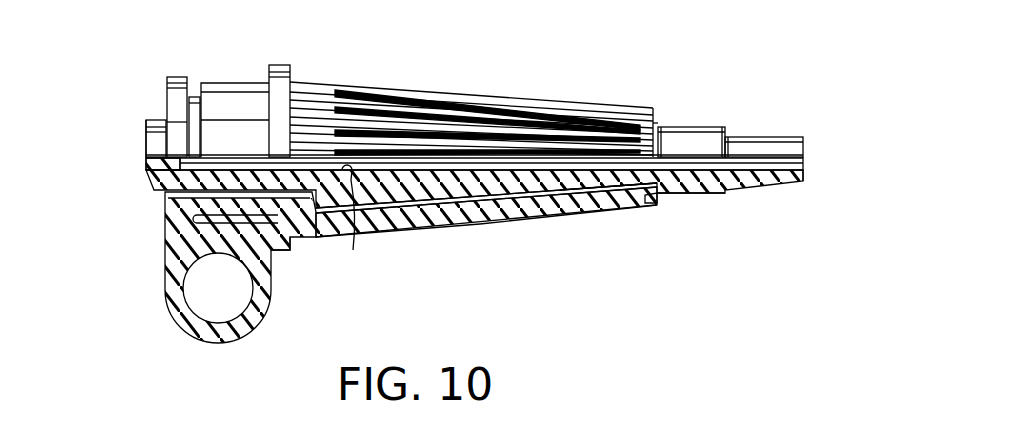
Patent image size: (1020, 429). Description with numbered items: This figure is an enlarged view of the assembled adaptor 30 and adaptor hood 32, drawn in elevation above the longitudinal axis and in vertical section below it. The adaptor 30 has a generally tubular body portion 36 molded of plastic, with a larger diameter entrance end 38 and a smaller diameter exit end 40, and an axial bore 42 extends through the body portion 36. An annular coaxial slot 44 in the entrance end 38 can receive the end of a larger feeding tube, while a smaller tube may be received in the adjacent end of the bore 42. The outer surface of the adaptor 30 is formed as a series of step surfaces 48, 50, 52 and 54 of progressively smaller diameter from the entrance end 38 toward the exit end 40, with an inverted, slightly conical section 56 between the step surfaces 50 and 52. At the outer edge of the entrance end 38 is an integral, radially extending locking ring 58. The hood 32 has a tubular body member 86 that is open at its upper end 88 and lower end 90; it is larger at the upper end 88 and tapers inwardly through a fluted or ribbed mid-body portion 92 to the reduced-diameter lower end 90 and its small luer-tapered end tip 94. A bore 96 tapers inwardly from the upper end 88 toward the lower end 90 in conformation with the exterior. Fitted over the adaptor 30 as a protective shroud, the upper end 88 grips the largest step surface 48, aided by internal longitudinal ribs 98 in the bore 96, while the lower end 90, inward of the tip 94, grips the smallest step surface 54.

The adaptor 30 is at (160, 283).
The adaptor hood 32 is at (548, 222).
The tubular body portion 36 is at (432, 210).
The entrance end 38 is at (145, 150).
The exit end 40 is at (733, 192).
The axial bore 42 is at (353, 250).
The annular coaxial slot 44 is at (152, 183).
The step surface 48 is at (192, 95).
The step surface 50 is at (400, 238).
The step surface 52 is at (668, 238).
The step surface 54 is at (682, 184).
The inverted conical section 56 is at (508, 222).
The locking ring 58 is at (210, 343).
The tubular body member 86 is at (344, 80).
The upper end 88 is at (240, 82).
The lower end 90 is at (705, 126).
The ribbed mid-body portion 92 is at (566, 96).
The end tip 94 is at (790, 182).
The bore 96 is at (594, 205).
The internal ribs 98 is at (274, 258).